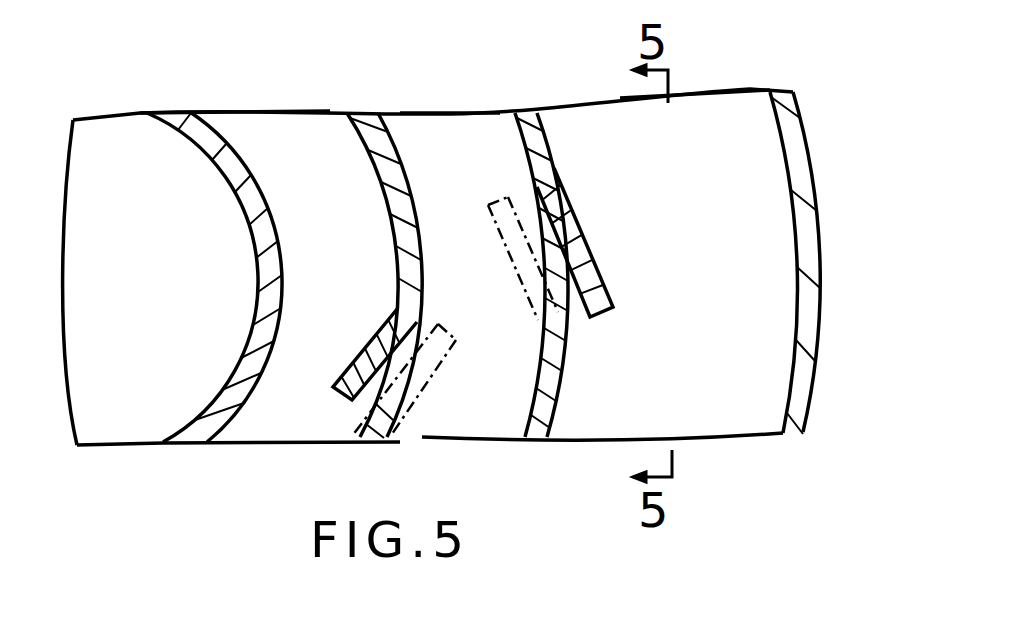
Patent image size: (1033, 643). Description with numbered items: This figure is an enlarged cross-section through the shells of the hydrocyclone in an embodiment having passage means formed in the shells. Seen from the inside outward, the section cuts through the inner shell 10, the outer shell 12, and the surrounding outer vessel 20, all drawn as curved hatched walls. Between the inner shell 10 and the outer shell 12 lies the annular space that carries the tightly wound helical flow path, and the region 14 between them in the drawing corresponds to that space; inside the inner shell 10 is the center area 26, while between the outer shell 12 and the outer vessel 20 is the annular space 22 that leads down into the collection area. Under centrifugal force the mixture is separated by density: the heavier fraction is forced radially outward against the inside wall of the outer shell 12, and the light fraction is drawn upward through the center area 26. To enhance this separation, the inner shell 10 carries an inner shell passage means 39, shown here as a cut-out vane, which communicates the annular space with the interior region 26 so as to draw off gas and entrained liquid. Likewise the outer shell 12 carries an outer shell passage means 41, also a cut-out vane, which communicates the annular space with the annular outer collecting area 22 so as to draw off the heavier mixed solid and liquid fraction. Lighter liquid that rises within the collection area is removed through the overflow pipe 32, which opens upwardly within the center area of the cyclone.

The inner shell 10 is at (402, 160).
The outer shell 12 is at (556, 144).
The gap between bands 14 is at (463, 162).
The outer vessel 20 is at (813, 177).
The annular space 22 is at (730, 150).
The center area 26 is at (312, 188).
The overflow pipe 32 is at (213, 417).
The inner shell passage means 39 is at (358, 405).
The outer shell passage means 41 is at (570, 300).